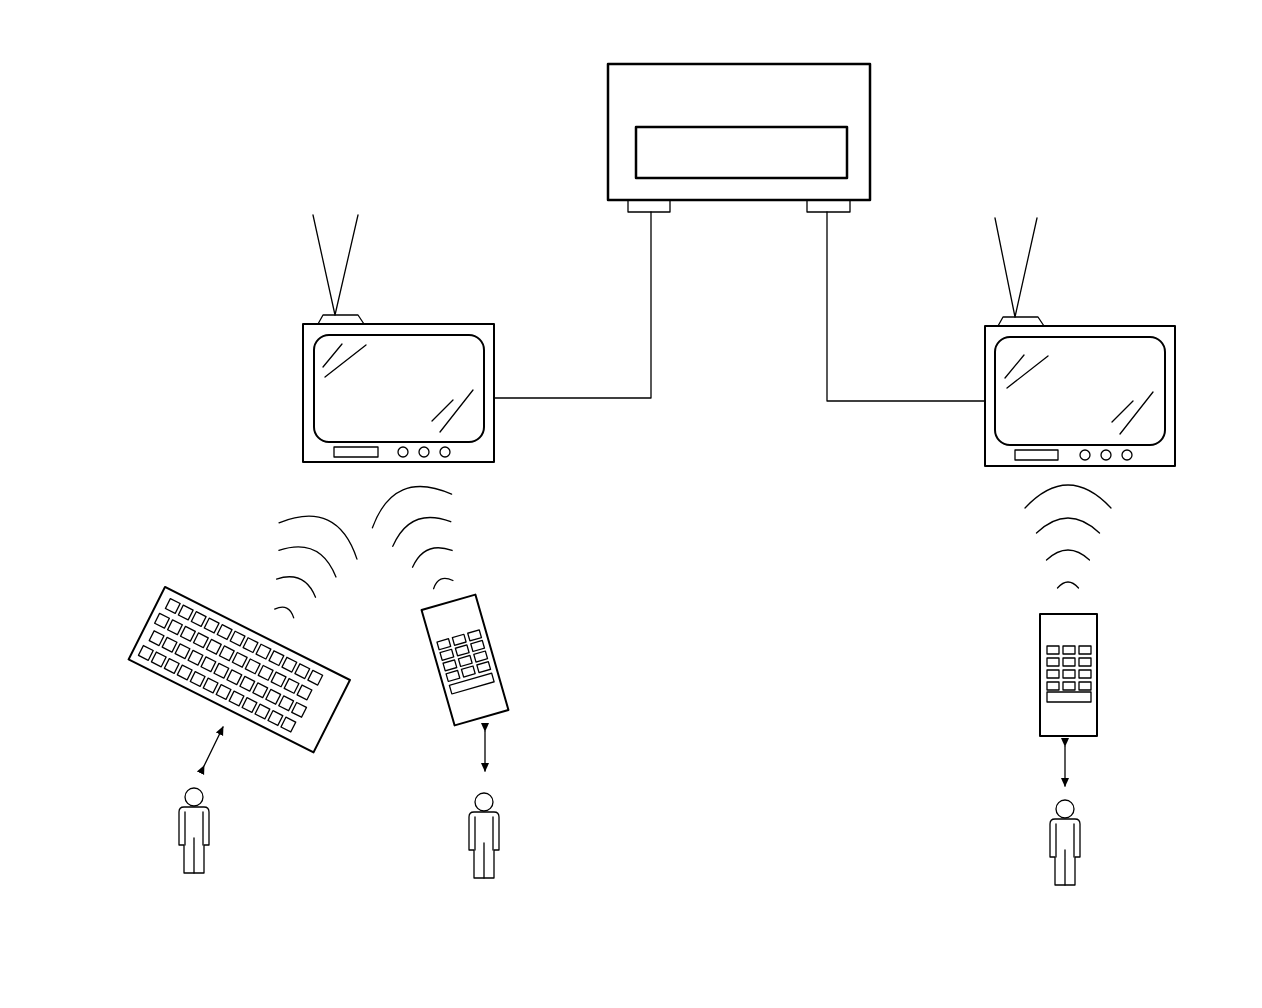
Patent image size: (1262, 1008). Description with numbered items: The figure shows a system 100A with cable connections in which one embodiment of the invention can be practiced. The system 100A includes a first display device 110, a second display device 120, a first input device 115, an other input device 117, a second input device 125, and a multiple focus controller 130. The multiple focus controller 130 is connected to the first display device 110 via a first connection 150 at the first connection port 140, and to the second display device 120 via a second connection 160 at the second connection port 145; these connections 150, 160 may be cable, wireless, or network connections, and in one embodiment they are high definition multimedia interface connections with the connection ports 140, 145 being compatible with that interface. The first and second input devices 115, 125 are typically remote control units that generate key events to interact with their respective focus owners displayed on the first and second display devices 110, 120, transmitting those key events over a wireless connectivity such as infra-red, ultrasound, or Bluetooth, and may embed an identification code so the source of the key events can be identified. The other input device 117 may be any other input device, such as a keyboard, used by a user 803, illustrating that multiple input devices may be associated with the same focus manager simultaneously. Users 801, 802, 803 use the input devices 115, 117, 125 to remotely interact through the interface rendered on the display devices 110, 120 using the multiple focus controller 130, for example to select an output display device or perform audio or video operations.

The system 100A is at (1094, 91).
The multiple focus controller 130 is at (797, 127).
The first connection port 140 is at (661, 212).
The second connection port 145 is at (840, 212).
The first connection 150 is at (575, 344).
The second connection 160 is at (905, 344).
The first display device 110 is at (480, 324).
The second display device 120 is at (1160, 326).
The other input device 117 is at (195, 593).
The first input device 115 is at (490, 698).
The second input device 125 is at (1097, 712).
The user 801 is at (500, 827).
The user 802 is at (210, 822).
The user 803 is at (1081, 834).